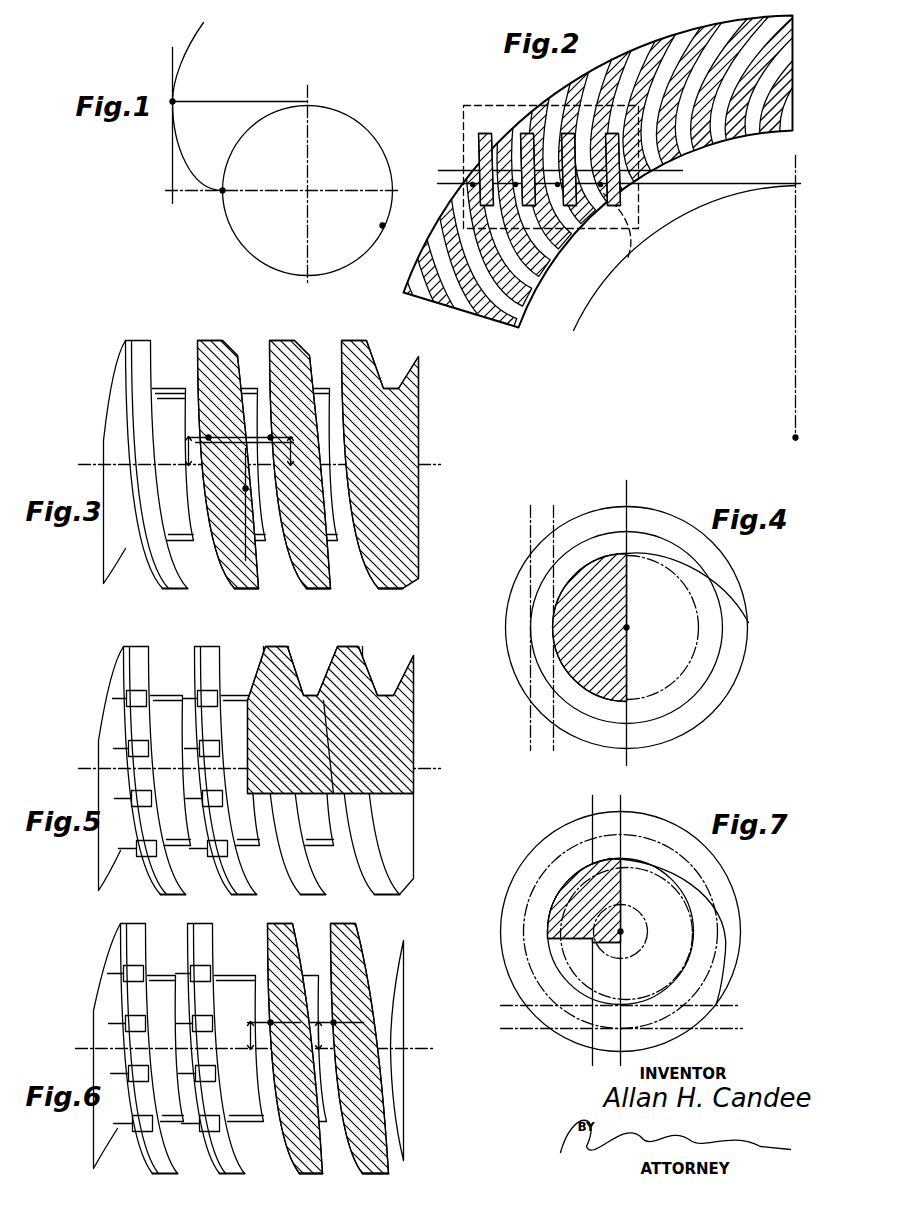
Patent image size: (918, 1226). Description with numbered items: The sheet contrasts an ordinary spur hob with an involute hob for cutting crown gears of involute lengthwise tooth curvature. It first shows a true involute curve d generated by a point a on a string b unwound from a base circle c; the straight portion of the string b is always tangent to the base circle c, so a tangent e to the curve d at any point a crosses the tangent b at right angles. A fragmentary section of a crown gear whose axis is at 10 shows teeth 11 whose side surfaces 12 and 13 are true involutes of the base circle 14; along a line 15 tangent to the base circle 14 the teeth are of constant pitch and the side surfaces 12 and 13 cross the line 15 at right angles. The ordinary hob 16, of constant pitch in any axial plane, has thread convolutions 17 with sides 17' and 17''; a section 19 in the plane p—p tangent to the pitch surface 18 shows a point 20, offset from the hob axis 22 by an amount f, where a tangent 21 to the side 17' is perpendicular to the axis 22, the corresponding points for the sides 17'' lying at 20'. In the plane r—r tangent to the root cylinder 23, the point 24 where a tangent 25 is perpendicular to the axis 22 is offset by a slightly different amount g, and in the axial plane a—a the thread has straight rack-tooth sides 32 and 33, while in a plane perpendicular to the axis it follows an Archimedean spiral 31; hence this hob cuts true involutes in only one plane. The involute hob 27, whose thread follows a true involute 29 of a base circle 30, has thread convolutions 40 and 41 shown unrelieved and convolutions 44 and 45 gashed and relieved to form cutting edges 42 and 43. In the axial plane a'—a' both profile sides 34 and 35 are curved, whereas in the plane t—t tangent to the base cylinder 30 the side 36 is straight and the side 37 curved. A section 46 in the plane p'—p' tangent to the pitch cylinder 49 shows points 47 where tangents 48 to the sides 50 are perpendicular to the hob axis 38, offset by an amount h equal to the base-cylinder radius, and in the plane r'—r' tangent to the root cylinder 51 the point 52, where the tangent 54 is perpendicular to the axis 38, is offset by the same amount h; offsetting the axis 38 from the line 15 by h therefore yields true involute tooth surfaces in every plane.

In FIG. 1, the point a is at (162, 106).
In FIG. 4, the point a is at (627, 625).
In FIG. 1, the string b is at (240, 101).
In FIG. 1, the base circle c is at (352, 262).
In FIG. 1, the involute curve d is at (190, 64).
In FIG. 1, the tangent to the involute curve e is at (168, 163).
In FIG. 2, the gear axis 10 is at (792, 440).
In FIG. 2, the teeth 11 is at (647, 55).
In FIG. 2, the side surface 12 is at (623, 68).
In FIG. 2, the side surface 13 is at (641, 72).
In FIG. 2, the base circle 14 is at (590, 307).
In FIG. 2, the line tangent to the base circle 15 is at (656, 186).
In FIG. 2, the hob 16 is at (463, 112).
In FIG. 3, the hob 16 is at (408, 533).
In FIG. 4, the hob 16 is at (712, 711).
In FIG. 2, the point 20 is at (459, 617).
In FIG. 3, the point 20 is at (236, 427).
In FIG. 2, the hob axis 22 is at (452, 170).
In FIG. 3, the hob axis 22 is at (430, 464).
In FIG. 4, the hob axis 22 is at (628, 627).
In FIG. 3, the thread convolution 17 is at (459, 617).
In FIG. 3, the side of the hob thread convolution 17' is at (180, 345).
In FIG. 3, the opposite side of the thread convolution 17'' is at (259, 365).
In FIG. 3, the section through thread convolution 19 is at (243, 512).
In FIG. 3, the point 20' is at (257, 505).
In FIG. 3, the tangent 21 is at (208, 478).
In FIG. 3, the point 24 is at (266, 449).
In FIG. 3, the tangent 25 is at (270, 325).
In FIG. 3, the straight thread profile 32 is at (372, 361).
In FIG. 3, the straight thread profile 33 is at (400, 583).
In FIG. 3, the offset distance f is at (184, 451).
In FIG. 3, the offset distance g is at (290, 451).
In FIG. 4, the pitch surface 18 is at (578, 708).
In FIG. 4, the root cylinder 23 is at (661, 690).
In FIG. 4, the Archimedean spiral 31 is at (712, 575).
In FIG. 4, the plane p— p is at (528, 632).
In FIG. 4, the plane r— r is at (553, 630).
In FIG. 5, the involute hob 27 is at (408, 836).
In FIG. 7, the involute hob 27 is at (738, 948).
In FIG. 5, the curved thread profile side 34 is at (339, 660).
In FIG. 5, the curved thread profile side 35 is at (367, 666).
In FIG. 5, the straight thread side 36 is at (302, 686).
In FIG. 5, the curved thread side 37 is at (263, 673).
In FIG. 5, the hob axis 38 is at (413, 768).
In FIG. 6, the hob axis 38 is at (405, 1048).
In FIG. 7, the hob axis 38 is at (622, 931).
In FIG. 5, the thread convolution 40 is at (320, 876).
In FIG. 6, the thread convolution 40 is at (315, 1161).
In FIG. 5, the thread convolution 41 is at (396, 889).
In FIG. 6, the thread convolution 41 is at (385, 1161).
In FIG. 5, the cutting edge 42 is at (205, 773).
In FIG. 5, the cutting edge 43 is at (228, 768).
In FIG. 5, the thread convolution 44 is at (138, 648).
In FIG. 6, the thread convolution 44 is at (138, 925).
In FIG. 5, the thread convolution 45 is at (215, 648).
In FIG. 6, the thread convolution 45 is at (205, 925).
In FIG. 6, the section through thread convolution 46 is at (300, 1115).
In FIG. 6, the point 47 is at (270, 1000).
In FIG. 6, the tangent 48 is at (270, 908).
In FIG. 6, the sides of the hob thread 50 is at (338, 945).
In FIG. 6, the point 52 is at (332, 1022).
In FIG. 6, the tangent 54 is at (333, 908).
In FIG. 6, the offset distance h is at (290, 1036).
In FIG. 7, the true involute 29 is at (700, 892).
In FIG. 7, the base circle 30 is at (630, 955).
In FIG. 7, the pitch cylinder 49 is at (527, 935).
In FIG. 7, the root cylinder 51 is at (690, 955).
In FIG. 7, the plane t— t is at (590, 931).
In FIG. 7, the plane a'— a' is at (624, 931).
In FIG. 7, the plane r'— r' is at (620, 1005).
In FIG. 7, the plane p'— p' is at (622, 1029).